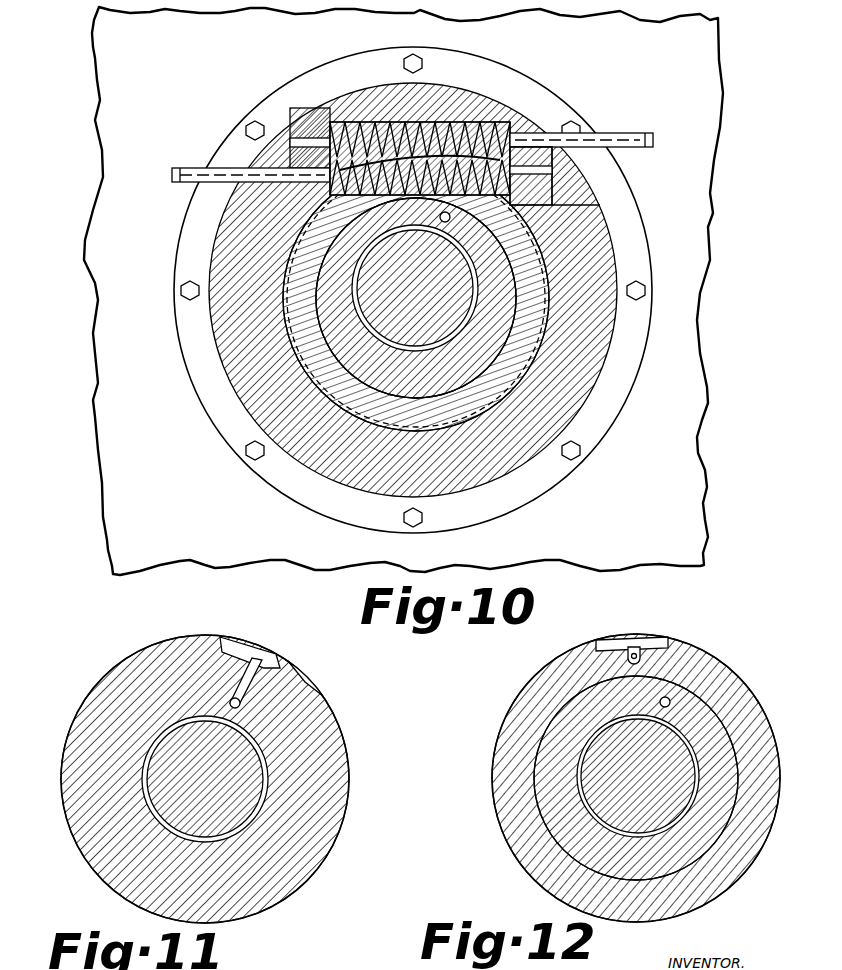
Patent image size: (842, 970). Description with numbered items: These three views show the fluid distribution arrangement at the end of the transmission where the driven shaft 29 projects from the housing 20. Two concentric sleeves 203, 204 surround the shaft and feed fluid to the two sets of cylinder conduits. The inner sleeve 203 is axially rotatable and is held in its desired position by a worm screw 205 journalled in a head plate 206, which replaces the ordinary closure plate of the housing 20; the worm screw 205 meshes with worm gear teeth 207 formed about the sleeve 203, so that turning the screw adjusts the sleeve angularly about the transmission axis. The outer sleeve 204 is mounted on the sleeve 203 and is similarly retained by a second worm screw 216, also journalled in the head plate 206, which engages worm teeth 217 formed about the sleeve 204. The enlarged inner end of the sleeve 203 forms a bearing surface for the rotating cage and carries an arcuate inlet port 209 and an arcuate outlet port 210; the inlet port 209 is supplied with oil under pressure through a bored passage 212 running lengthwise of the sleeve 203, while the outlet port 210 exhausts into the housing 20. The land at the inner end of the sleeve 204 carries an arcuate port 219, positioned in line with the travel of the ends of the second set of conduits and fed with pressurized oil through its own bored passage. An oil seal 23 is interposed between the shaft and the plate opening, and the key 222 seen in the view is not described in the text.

In FIG. 10, the housing 20 is at (108, 352).
In FIG. 11, the oil seal 23 is at (82, 824).
In FIG. 10, the driven shaft 29 is at (378, 308).
In FIG. 11, the driven shaft 29 is at (168, 798).
In FIG. 12, the driven shaft 29 is at (598, 768).
In FIG. 10, the sleeve 203 is at (373, 377).
In FIG. 12, the sleeve 203 is at (552, 790).
In FIG. 10, the sleeve 204 is at (308, 357).
In FIG. 12, the sleeve 204 is at (520, 816).
In FIG. 10, the worm screw 205 is at (534, 142).
In FIG. 10, the head plate 206 is at (413, 290).
In FIG. 10, the worm gear teeth 207 is at (546, 203).
In FIG. 11, the inlet port 209 is at (284, 656).
In FIG. 11, the outlet port 210 is at (318, 694).
In FIG. 10, the bored passage 212 is at (450, 216).
In FIG. 11, the bored passage 212 is at (230, 703).
In FIG. 12, the bored passage 212 is at (670, 701).
In FIG. 10, the worm screw 216 is at (445, 125).
In FIG. 10, the worm teeth 217 is at (356, 122).
In FIG. 12, the arcuate port 219 is at (656, 641).
In FIG. 12, the key 222 is at (634, 647).